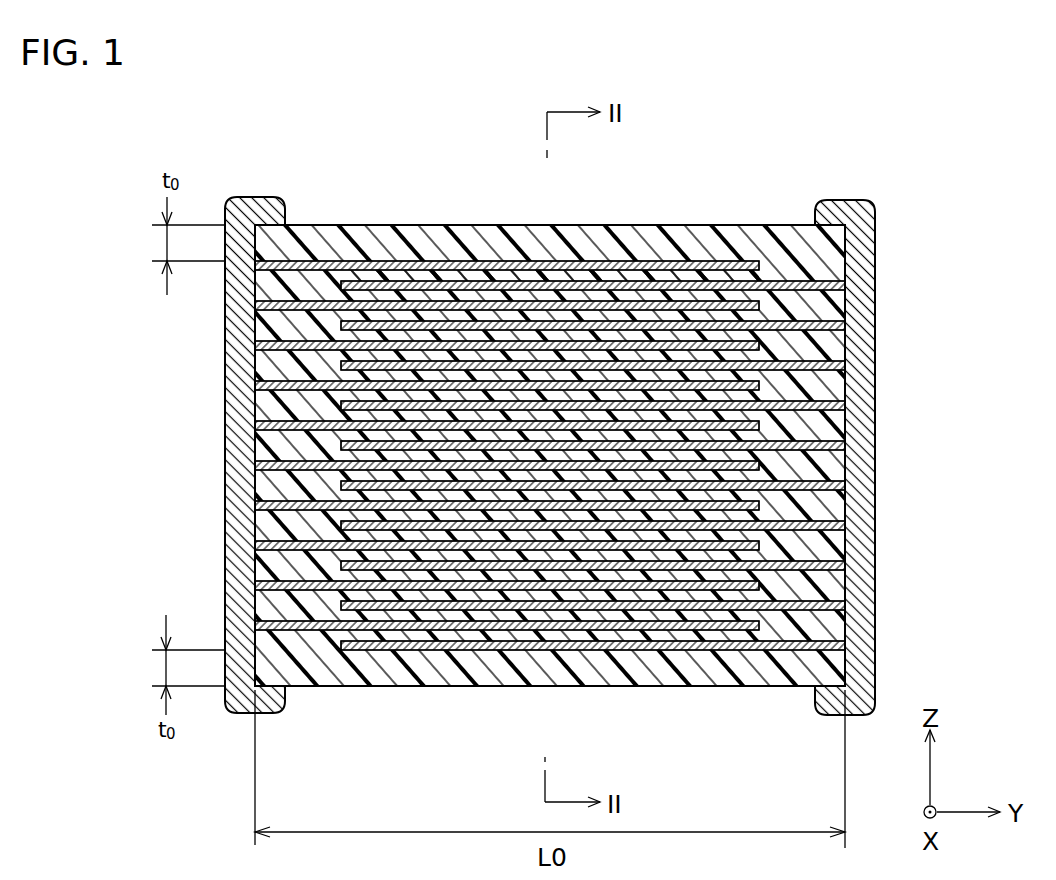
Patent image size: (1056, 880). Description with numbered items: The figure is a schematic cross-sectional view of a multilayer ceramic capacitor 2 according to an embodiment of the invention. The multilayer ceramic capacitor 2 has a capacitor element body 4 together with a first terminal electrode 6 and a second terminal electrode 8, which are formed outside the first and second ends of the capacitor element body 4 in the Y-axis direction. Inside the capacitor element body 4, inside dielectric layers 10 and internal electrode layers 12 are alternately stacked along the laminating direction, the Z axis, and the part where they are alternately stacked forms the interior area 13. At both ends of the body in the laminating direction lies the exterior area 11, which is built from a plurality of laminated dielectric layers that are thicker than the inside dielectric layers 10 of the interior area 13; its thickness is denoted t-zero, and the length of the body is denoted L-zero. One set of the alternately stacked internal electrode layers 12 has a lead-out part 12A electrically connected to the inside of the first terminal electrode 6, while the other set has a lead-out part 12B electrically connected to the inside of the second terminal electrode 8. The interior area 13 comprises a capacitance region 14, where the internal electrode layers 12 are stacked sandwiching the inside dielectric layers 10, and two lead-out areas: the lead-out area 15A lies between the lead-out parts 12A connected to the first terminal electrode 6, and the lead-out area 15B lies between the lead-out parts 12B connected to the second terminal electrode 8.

The multilayer ceramic capacitor 2 is at (543, 475).
The capacitor element body 4 is at (543, 474).
The first terminal electrode 6 is at (240, 548).
The second terminal electrode 8 is at (849, 207).
The inside dielectric layer 10 is at (497, 278).
The exterior area 11 is at (435, 232).
The internal electrode layer 12 is at (503, 451).
The lead-out part 12A is at (322, 237).
The lead-out part 12B is at (593, 406).
The interior area 13 is at (543, 451).
The capacitance region 14 is at (670, 277).
The lead-out area 15A is at (283, 285).
The lead-out area 15B is at (815, 312).